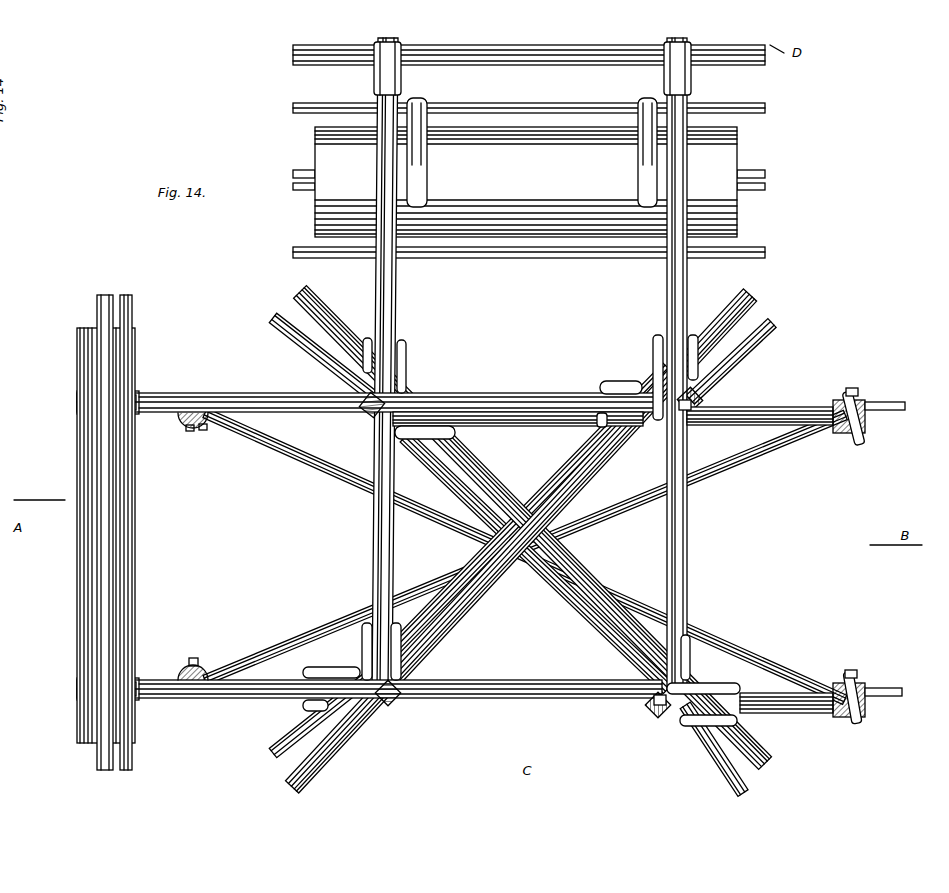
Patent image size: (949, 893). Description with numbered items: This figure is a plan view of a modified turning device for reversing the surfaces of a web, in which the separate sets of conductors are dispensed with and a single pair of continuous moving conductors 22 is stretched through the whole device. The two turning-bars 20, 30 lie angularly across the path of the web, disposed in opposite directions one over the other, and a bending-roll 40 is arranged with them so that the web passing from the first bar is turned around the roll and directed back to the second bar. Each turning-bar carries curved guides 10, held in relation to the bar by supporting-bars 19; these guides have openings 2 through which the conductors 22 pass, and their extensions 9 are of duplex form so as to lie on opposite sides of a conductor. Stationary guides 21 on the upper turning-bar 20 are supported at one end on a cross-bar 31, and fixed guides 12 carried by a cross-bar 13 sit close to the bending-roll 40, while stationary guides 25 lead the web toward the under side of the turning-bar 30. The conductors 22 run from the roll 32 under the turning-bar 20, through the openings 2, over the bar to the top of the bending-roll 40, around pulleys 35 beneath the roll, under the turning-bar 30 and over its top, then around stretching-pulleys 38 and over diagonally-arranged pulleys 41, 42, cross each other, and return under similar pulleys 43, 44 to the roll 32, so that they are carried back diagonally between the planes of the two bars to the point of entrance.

The opening 2 is at (672, 553).
The extension 9 is at (367, 338).
The curved guide 10 is at (366, 385).
The fixed guide 12 is at (427, 170).
The cross-bar 13 is at (540, 110).
The supporting-bar 19 is at (702, 753).
The upper turning-bar 20 is at (572, 468).
The stationary guide 21 is at (275, 395).
The moving conductor 22 is at (395, 305).
The stationary guide 25 is at (687, 553).
The turning-bar 30 is at (476, 475).
The cross-bar 31 is at (133, 487).
The roll 32 is at (106, 532).
The pulley 35 is at (401, 75).
The stretching-pulley 38 is at (835, 406).
The bending-roll 40 is at (526, 182).
The diagonally-arranged pulley 41 is at (866, 700).
The diagonally-arranged pulley 42 is at (865, 428).
The return pulley 43 is at (198, 426).
The return pulley 44 is at (200, 672).